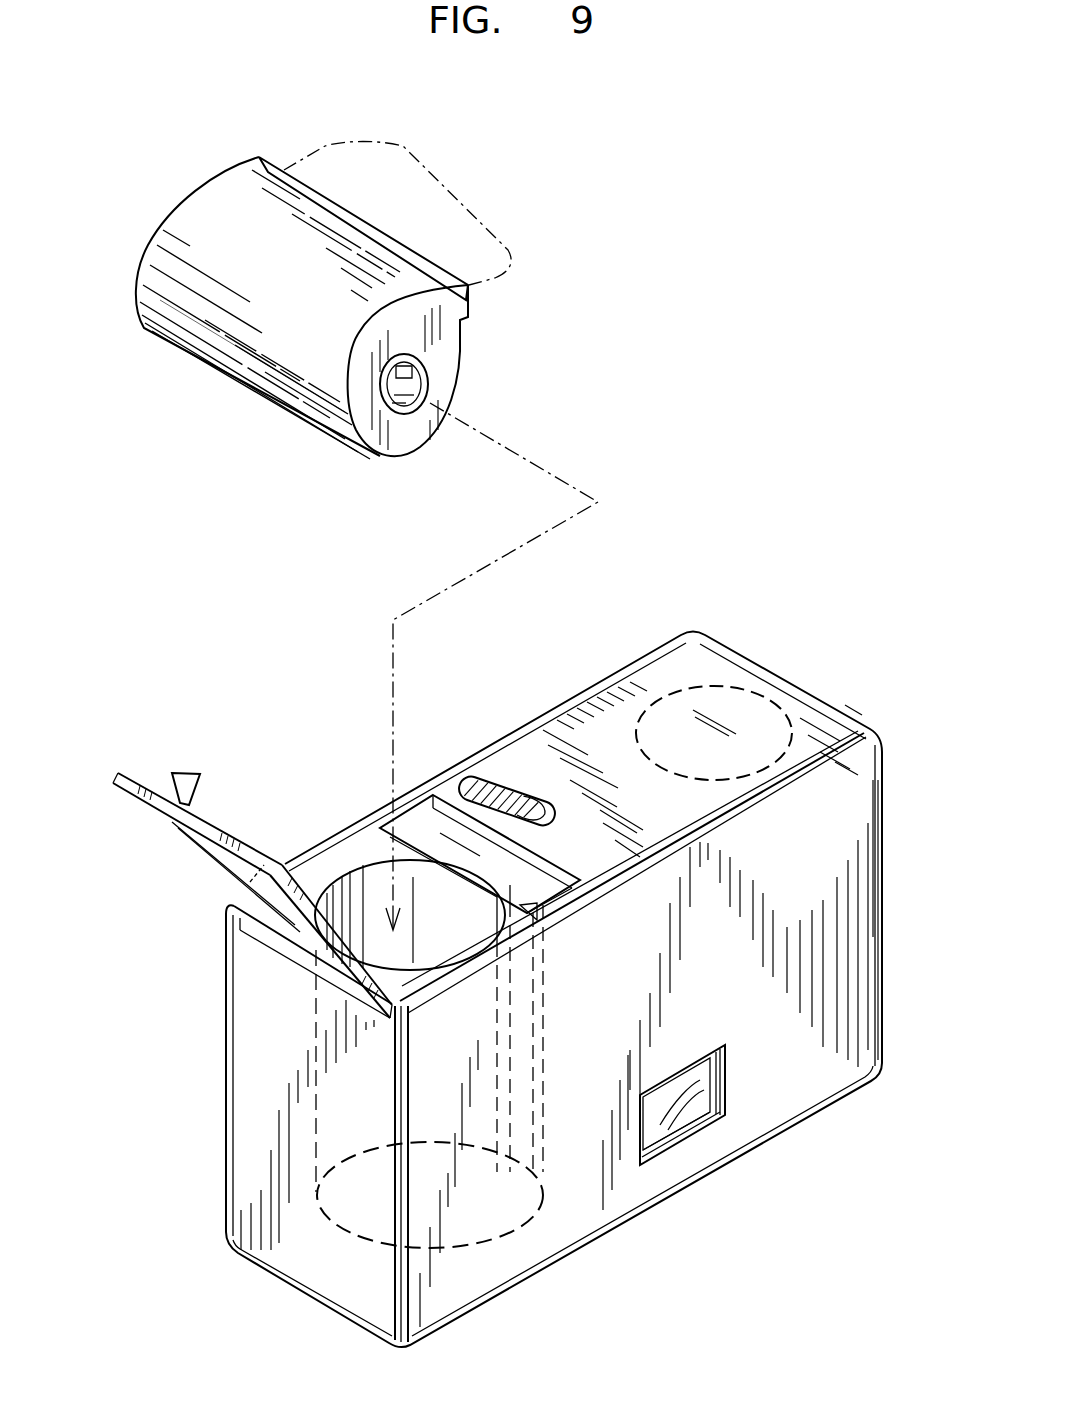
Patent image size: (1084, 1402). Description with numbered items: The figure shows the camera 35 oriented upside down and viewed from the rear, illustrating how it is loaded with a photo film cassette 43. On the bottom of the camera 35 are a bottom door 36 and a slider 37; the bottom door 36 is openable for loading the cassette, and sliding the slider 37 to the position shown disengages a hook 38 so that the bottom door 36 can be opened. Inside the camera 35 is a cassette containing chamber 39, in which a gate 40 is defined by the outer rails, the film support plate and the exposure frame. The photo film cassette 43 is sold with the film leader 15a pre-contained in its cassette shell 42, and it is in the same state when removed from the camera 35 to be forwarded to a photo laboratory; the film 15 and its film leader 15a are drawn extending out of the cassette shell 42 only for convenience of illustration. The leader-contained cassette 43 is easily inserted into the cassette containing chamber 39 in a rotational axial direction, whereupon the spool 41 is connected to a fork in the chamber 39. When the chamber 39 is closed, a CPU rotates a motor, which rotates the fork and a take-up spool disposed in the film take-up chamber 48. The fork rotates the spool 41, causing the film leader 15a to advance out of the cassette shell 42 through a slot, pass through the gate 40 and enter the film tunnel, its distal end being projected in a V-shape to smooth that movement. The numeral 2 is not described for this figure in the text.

The camera body 2 is at (795, 1100).
The film 15 is at (360, 281).
The film leader 15a is at (376, 166).
The camera 35 is at (605, 668).
The bottom door 36 is at (177, 840).
The slider 37 is at (492, 775).
The hook 38 is at (190, 773).
The cassette containing chamber 39 is at (352, 893).
The gate 40 is at (522, 1022).
The spool 41 is at (429, 384).
The cassette shell 42 is at (447, 334).
The photo film cassette 43 is at (219, 398).
The film take-up chamber 48 is at (754, 697).